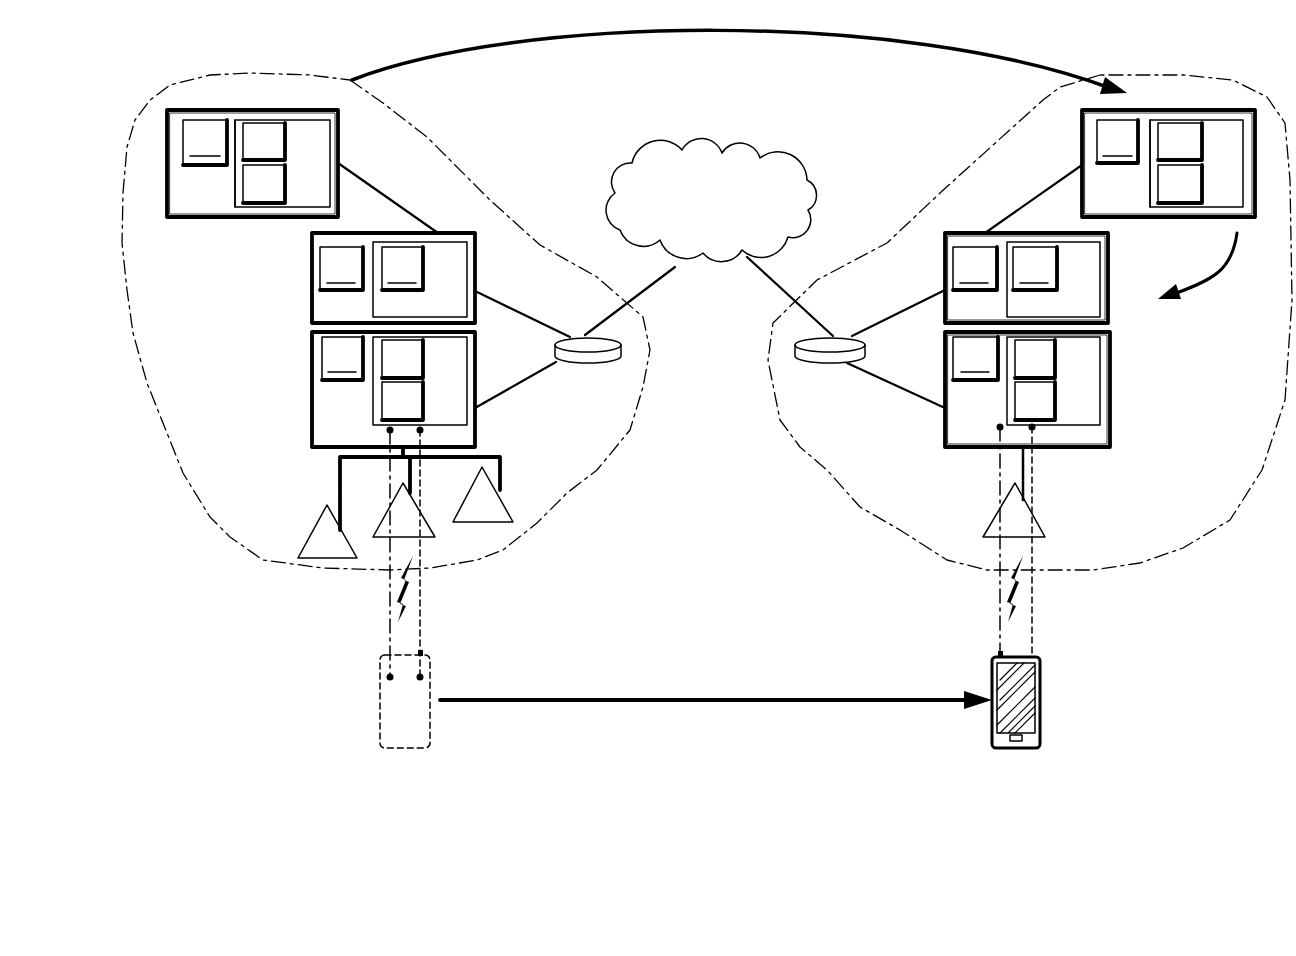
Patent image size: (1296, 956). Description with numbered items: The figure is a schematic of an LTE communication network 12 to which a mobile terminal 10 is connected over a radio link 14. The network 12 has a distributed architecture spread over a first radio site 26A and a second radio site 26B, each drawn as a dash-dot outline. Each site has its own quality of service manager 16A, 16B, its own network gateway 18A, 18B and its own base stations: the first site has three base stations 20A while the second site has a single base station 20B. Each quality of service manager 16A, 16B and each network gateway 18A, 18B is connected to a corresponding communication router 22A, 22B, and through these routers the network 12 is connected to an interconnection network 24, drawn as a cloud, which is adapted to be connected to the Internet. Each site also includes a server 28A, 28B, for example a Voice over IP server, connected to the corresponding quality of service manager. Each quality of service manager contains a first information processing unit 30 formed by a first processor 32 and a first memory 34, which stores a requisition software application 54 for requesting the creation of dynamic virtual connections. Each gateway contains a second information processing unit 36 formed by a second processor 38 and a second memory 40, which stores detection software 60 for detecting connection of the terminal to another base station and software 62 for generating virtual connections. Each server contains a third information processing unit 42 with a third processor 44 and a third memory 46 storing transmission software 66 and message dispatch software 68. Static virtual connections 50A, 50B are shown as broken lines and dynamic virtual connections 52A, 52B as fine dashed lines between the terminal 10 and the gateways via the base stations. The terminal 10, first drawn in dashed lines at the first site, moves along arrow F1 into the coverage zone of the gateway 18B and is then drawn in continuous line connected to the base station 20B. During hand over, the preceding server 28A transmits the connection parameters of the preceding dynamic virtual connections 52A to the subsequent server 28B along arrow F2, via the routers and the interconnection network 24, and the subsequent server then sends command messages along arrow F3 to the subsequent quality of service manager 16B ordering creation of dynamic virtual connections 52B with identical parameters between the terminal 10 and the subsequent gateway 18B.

The mobile terminal 10 is at (1040, 722).
The communication network 12 is at (1188, 575).
The radio link 14 is at (1011, 542).
The quality of service manager 16A is at (743, 220).
The quality of service manager 16B is at (1108, 280).
The network gateway 18A is at (671, 389).
The network gateway 18B is at (1110, 378).
The base stations 20A is at (312, 530).
The base station 20B is at (1040, 520).
The communication router 22A is at (590, 363).
The communication router 22B is at (822, 362).
The interconnection network 24 is at (798, 153).
The first radio site 26A is at (567, 493).
The second radio site 26B is at (860, 507).
The server 28A is at (665, 187).
The server 28B is at (1255, 158).
The first information processing unit 30 is at (322, 309).
The first processor 32 is at (658, 268).
The first memory 34 is at (373, 300).
The second information processing unit 36 is at (322, 418).
The second processor 38 is at (660, 358).
The second memory 40 is at (373, 400).
The third information processing unit 42 is at (188, 192).
The third processor 44 is at (660, 142).
The third memory 46 is at (235, 184).
The static virtual connection 50A is at (380, 602).
The static virtual connection 50B is at (1000, 600).
The dynamic virtual connection 52A is at (422, 618).
The dynamic virtual connection 52B is at (1033, 603).
The requisition software application 54 is at (719, 268).
The detection software 60 is at (718, 359).
The virtual connection generation software 62 is at (718, 401).
The transmission software 66 is at (722, 141).
The message dispatch software 68 is at (722, 184).
The arrow F1 is at (712, 697).
The arrow F2 is at (487, 50).
The arrow F3 is at (1218, 274).